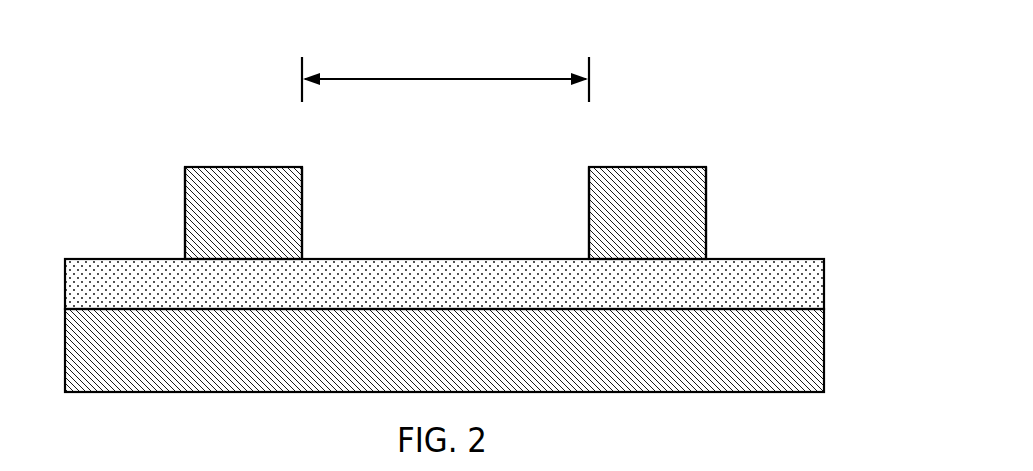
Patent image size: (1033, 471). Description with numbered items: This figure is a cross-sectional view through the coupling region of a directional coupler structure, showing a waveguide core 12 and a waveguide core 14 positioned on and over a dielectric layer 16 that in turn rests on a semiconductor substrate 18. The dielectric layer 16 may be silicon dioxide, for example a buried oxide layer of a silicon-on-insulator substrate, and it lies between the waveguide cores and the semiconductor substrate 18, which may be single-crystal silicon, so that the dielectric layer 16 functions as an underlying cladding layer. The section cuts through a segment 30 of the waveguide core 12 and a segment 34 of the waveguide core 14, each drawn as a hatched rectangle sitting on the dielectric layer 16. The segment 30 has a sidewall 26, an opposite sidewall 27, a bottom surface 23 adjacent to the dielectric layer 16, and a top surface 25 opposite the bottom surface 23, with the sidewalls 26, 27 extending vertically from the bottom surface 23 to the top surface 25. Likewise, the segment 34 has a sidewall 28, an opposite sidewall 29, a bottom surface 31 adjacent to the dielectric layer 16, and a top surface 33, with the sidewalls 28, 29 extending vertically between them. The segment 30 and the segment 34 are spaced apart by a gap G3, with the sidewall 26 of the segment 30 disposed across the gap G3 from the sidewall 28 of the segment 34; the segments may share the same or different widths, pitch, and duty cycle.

The waveguide core 12 is at (160, 149).
The waveguide core 14 is at (738, 155).
The dielectric layer 16 is at (793, 293).
The semiconductor substrate 18 is at (798, 368).
The bottom surface 23 is at (267, 259).
The top surface 25 is at (268, 167).
The sidewall 26 is at (303, 217).
The sidewall 27 is at (185, 192).
The sidewall 28 is at (589, 208).
The sidewall 29 is at (706, 202).
The segment 30 is at (218, 237).
The bottom surface 31 is at (615, 259).
The top surface 33 is at (617, 167).
The segment 34 is at (668, 240).
The gap G3 is at (445, 68).